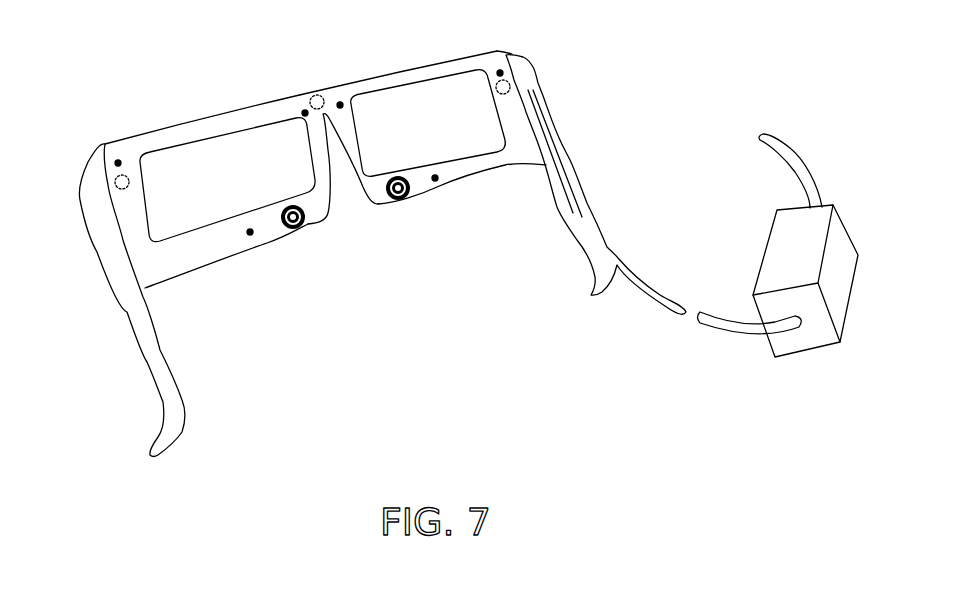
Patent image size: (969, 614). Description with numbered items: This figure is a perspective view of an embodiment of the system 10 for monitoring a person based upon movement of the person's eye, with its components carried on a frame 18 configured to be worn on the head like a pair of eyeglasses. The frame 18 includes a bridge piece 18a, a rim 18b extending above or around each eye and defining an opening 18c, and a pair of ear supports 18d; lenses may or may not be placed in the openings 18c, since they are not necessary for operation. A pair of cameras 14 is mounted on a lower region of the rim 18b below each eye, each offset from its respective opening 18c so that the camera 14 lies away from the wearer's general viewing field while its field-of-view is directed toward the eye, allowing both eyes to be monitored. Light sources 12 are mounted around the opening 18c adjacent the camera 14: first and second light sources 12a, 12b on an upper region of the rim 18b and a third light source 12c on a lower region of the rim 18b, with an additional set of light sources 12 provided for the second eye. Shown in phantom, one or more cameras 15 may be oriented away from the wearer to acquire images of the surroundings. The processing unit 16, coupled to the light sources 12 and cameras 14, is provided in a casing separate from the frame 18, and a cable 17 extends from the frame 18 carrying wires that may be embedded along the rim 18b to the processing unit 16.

The system 10 is at (579, 31).
The light sources 12 is at (504, 68).
The first light source 12a is at (117, 156).
The second light source 12b is at (303, 106).
The third light source 12c is at (249, 240).
The camera 14 is at (299, 225).
The camera 15 is at (121, 194).
The processing unit 16 is at (762, 242).
The cable 17 is at (718, 311).
The frame 18 is at (462, 57).
The bridge piece 18a is at (338, 80).
The rim 18b is at (178, 117).
The opening 18c is at (174, 155).
The ear supports 18d is at (130, 311).